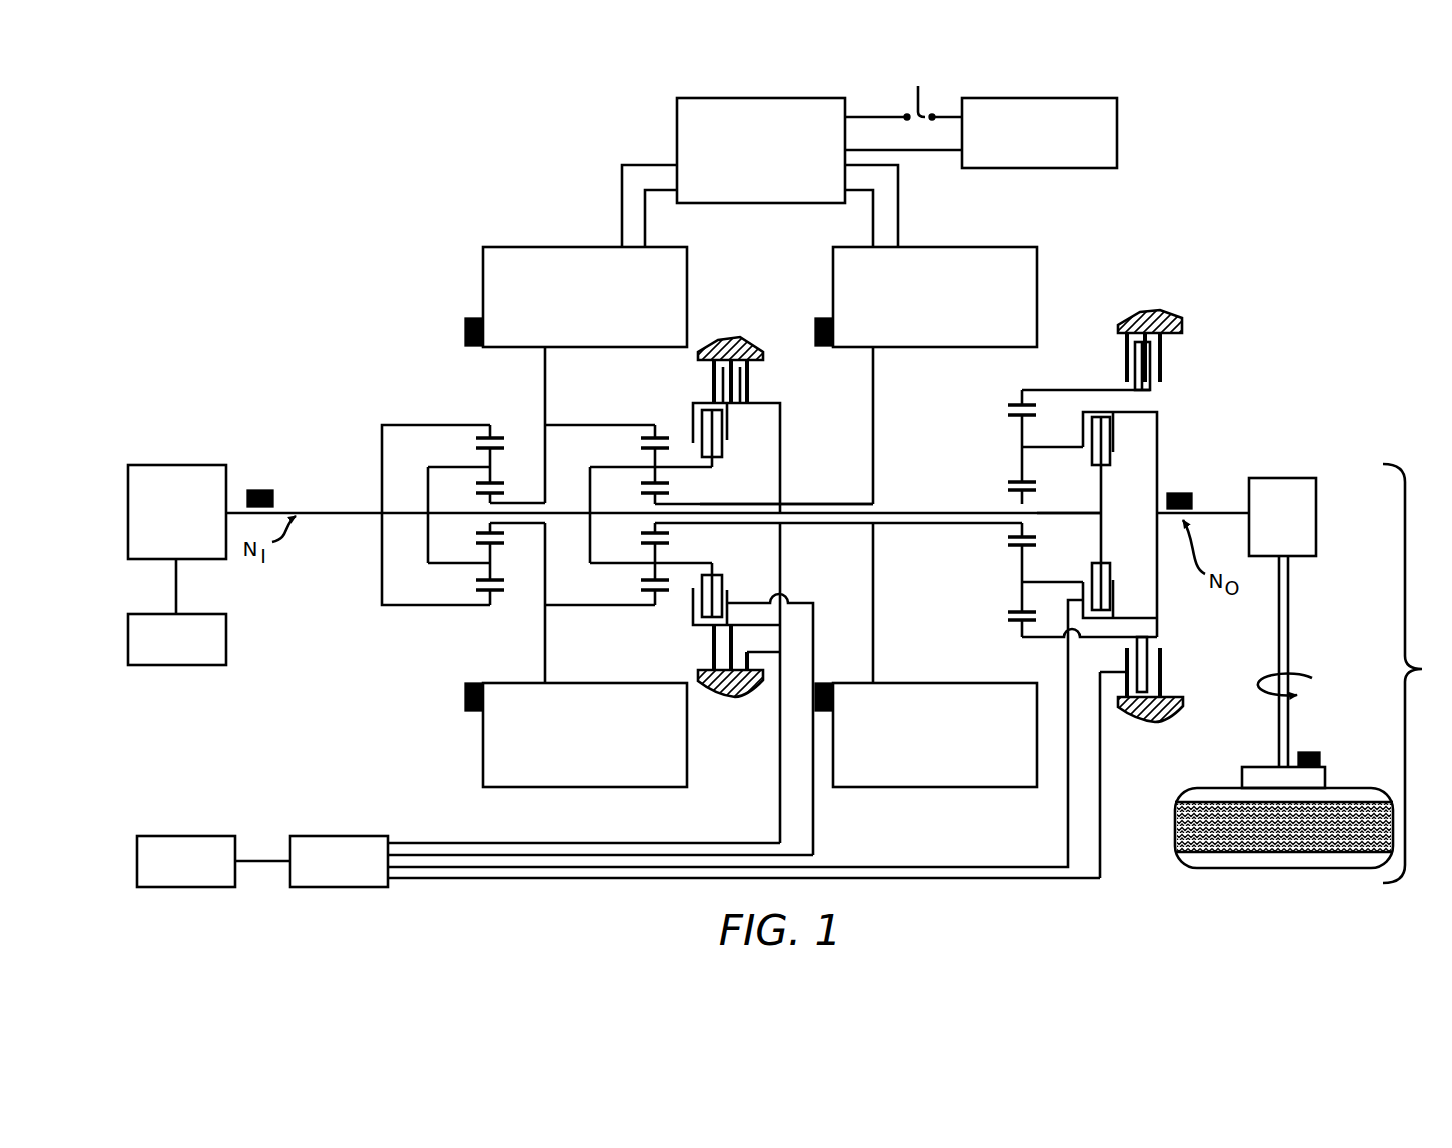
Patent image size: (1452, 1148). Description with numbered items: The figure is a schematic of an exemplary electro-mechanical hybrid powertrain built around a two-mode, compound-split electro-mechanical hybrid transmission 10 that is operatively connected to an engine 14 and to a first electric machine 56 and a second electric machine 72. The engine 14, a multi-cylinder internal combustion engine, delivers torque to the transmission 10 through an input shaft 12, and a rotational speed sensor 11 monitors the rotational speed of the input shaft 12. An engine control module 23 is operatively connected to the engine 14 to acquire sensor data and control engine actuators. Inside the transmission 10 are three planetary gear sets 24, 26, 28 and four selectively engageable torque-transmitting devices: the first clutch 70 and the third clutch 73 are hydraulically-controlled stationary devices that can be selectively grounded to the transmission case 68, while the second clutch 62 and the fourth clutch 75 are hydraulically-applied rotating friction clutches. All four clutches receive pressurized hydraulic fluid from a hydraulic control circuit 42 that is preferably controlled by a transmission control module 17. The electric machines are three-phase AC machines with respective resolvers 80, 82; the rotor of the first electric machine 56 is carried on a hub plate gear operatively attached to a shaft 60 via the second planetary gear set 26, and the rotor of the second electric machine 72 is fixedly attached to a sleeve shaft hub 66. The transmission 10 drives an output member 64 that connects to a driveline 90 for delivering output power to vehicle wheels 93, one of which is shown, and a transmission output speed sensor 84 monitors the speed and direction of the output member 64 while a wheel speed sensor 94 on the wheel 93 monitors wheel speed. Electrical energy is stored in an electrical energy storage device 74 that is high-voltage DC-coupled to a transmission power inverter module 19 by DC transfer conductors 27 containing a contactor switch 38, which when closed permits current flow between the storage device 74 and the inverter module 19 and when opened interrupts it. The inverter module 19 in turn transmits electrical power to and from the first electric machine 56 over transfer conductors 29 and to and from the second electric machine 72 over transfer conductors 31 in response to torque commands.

The electro-mechanical hybrid transmission 10 is at (444, 206).
The rotational speed sensor 11 is at (260, 490).
The input shaft 12 is at (340, 511).
The engine 14 is at (186, 465).
The transmission control module 17 is at (168, 836).
The transmission power inverter module 19 is at (677, 116).
The engine control module 23 is at (226, 656).
The first planetary gear set 24 is at (486, 420).
The second planetary gear set 26 is at (651, 420).
The DC transfer conductors 27 is at (862, 117).
The third planetary gear set 28 is at (1010, 390).
The transfer conductors 29 is at (622, 200).
The transfer conductors 31 is at (898, 200).
The contactor switch 38 is at (925, 106).
The hydraulic control circuit 42 is at (302, 836).
The first electric machine 56 is at (483, 277).
The shaft 60 is at (1073, 511).
The clutch C2 62 is at (1116, 453).
The output member 64 is at (1216, 513).
The sleeve shaft hub 66 is at (912, 504).
The transmission case 68 is at (734, 337).
The clutch C1 70 is at (1113, 357).
The second electric machine 72 is at (1037, 265).
The clutch C3 73 is at (756, 385).
The electrical energy storage device 74 is at (1117, 125).
The clutch C4 75 is at (734, 438).
The resolver 80 is at (465, 332).
The resolver 82 is at (824, 318).
The transmission output speed sensor 84 is at (1180, 493).
The driveline 90 is at (1305, 673).
The vehicle wheel 93 is at (1242, 775).
The wheel speed sensor 94 is at (1308, 752).